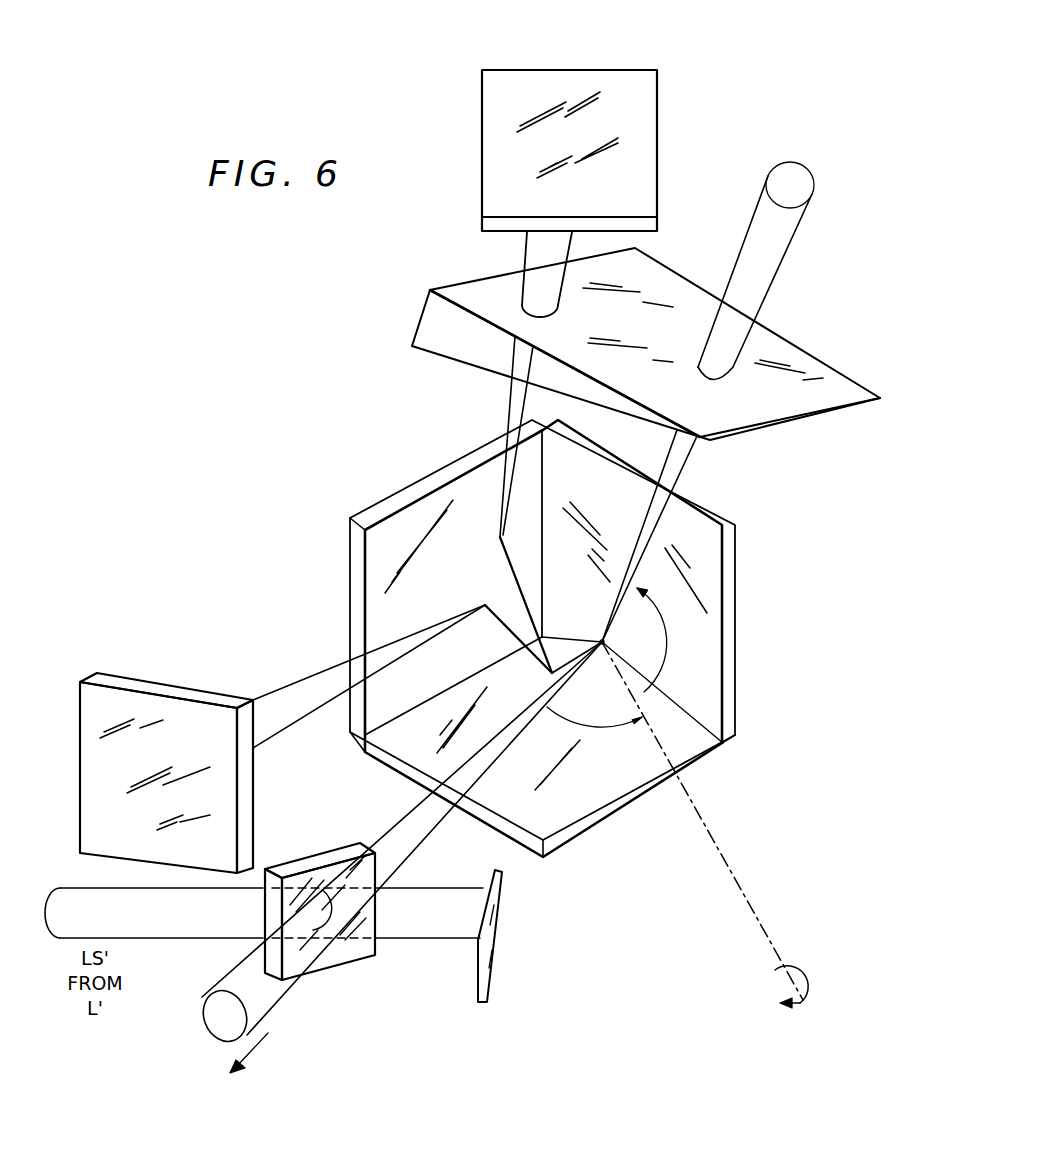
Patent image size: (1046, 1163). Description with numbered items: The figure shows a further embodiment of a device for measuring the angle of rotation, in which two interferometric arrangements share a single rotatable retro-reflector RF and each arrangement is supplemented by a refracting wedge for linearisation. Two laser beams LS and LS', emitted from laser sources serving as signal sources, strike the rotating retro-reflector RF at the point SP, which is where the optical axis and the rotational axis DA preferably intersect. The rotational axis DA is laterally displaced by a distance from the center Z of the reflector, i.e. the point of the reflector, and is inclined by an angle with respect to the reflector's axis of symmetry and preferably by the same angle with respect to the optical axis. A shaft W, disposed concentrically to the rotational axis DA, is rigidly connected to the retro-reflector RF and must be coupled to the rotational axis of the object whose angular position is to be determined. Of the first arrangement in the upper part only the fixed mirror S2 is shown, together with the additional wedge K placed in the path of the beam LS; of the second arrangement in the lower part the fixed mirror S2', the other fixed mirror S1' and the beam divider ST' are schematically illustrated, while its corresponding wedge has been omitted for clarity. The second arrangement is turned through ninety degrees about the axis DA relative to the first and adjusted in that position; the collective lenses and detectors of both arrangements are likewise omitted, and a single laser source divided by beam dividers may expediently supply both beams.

The second fixed plane mirror S2 is at (569, 169).
The laser beam LS is at (758, 226).
The refracting wedge K is at (432, 314).
The retro-reflector RF is at (712, 670).
The center of the reflector Z is at (543, 634).
The intersection point SP is at (602, 641).
The shaft W is at (723, 851).
The rotational axis DA is at (807, 1010).
The fixed mirror of the second arrangement S2' is at (282, 739).
The second laser beam LS' is at (399, 859).
The beam divider ST' is at (320, 891).
The other fixed mirror of the second arrangement S1' is at (517, 940).